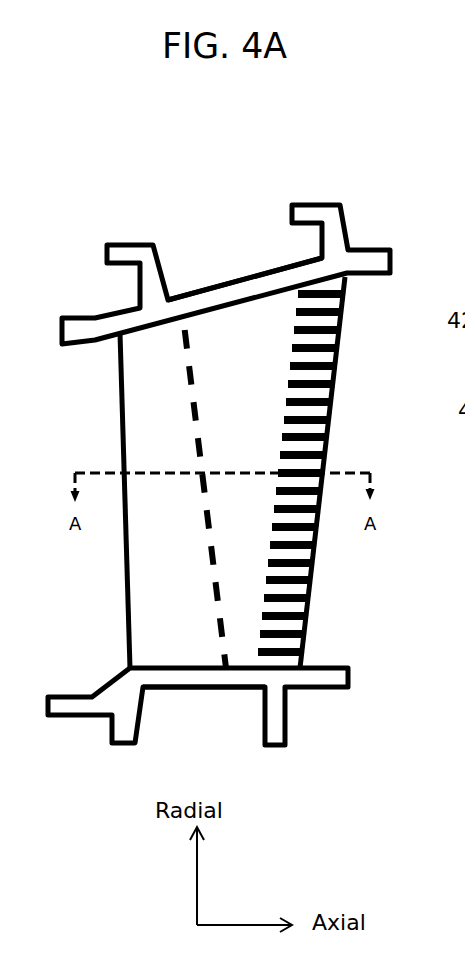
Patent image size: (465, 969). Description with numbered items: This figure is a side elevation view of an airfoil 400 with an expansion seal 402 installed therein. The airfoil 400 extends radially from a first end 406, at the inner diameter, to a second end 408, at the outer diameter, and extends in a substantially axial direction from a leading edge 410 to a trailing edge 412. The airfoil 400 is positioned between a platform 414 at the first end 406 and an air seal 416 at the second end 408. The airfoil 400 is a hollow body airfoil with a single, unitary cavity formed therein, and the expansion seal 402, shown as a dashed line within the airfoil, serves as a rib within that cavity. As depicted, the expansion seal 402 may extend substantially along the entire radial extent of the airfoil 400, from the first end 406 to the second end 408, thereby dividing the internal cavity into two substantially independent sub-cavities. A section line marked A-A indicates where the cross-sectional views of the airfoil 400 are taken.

The airfoil 400 is at (244, 472).
The expansion seal 402 is at (205, 443).
The first end 406 is at (195, 690).
The second end 408 is at (257, 273).
The leading edge 410 is at (120, 418).
The trailing edge 412 is at (313, 585).
The platform 414 is at (188, 682).
The air seal 416 is at (242, 280).